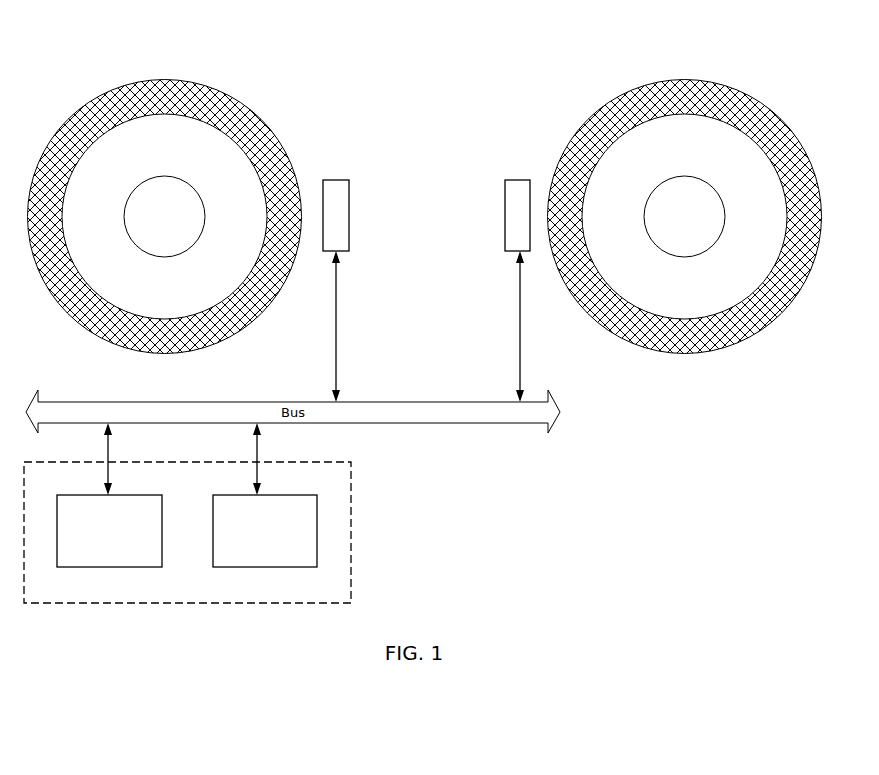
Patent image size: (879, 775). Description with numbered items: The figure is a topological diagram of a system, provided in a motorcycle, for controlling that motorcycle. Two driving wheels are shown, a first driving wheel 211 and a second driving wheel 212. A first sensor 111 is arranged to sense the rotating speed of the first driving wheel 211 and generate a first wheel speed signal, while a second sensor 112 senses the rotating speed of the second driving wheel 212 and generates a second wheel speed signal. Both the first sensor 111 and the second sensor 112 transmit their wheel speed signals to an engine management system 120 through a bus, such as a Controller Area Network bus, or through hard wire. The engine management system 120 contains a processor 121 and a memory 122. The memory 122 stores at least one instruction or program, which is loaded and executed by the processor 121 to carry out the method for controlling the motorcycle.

The first driving wheel 211 is at (217, 70).
The second driving wheel 212 is at (754, 77).
The first sensor 111 is at (333, 187).
The second sensor 112 is at (522, 188).
The engine management system 120 is at (62, 485).
The processor 121 is at (95, 540).
The memory 122 is at (252, 540).